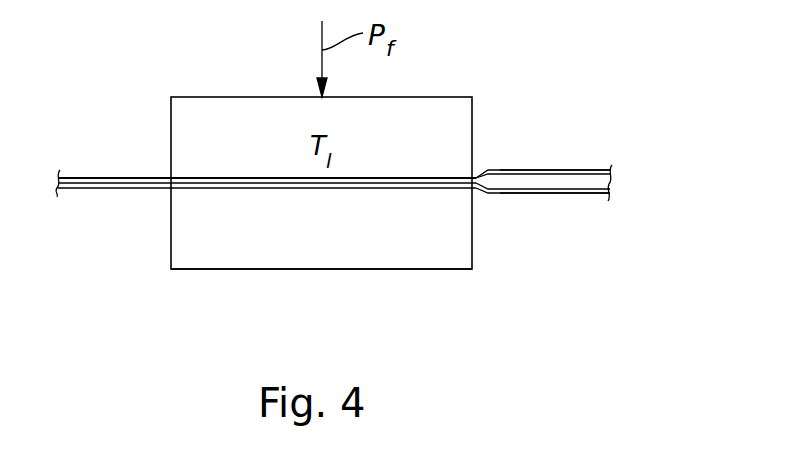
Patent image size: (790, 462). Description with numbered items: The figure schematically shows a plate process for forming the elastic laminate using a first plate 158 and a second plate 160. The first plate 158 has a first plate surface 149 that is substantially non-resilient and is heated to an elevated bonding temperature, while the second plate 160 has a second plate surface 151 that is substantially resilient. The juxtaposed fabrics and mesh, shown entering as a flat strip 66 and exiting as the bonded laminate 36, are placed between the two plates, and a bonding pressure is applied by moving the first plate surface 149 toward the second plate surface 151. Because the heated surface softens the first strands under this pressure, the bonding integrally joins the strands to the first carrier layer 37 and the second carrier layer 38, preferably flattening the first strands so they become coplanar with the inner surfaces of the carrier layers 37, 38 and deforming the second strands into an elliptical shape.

The formed strip (leaf) exiting die 36 is at (598, 182).
The first carrier layer 37 is at (588, 170).
The second carrier layer 38 is at (588, 196).
The flat strip entering die 66 is at (122, 178).
The first plate surface 149 is at (446, 176).
The second plate surface 151 is at (446, 190).
The first plate 158 is at (455, 97).
The second plate 160 is at (455, 270).